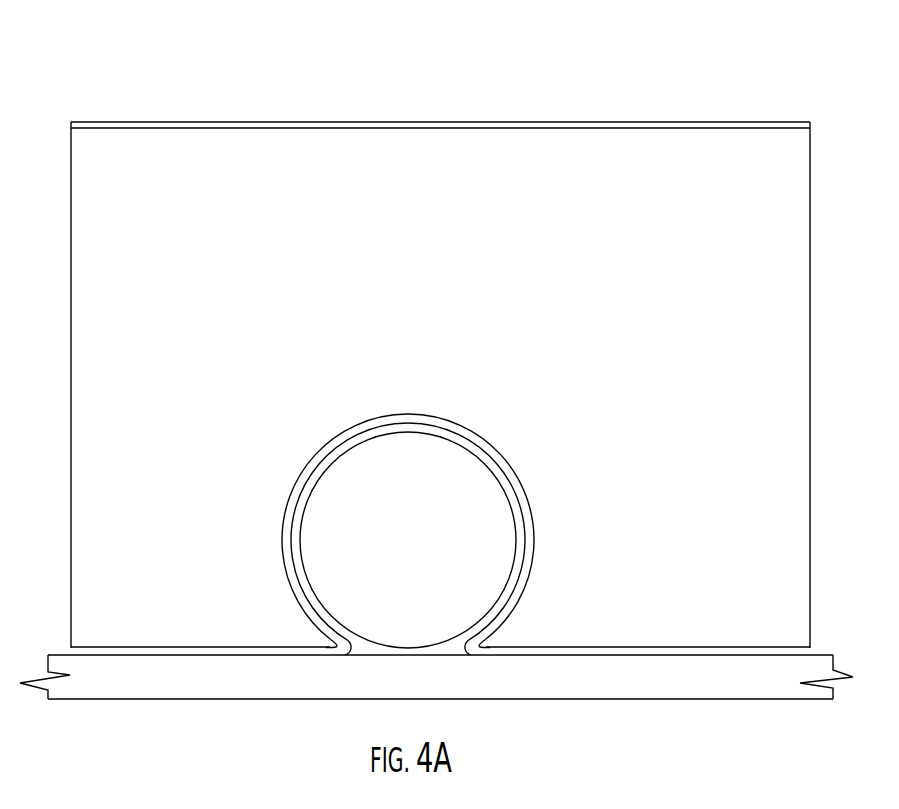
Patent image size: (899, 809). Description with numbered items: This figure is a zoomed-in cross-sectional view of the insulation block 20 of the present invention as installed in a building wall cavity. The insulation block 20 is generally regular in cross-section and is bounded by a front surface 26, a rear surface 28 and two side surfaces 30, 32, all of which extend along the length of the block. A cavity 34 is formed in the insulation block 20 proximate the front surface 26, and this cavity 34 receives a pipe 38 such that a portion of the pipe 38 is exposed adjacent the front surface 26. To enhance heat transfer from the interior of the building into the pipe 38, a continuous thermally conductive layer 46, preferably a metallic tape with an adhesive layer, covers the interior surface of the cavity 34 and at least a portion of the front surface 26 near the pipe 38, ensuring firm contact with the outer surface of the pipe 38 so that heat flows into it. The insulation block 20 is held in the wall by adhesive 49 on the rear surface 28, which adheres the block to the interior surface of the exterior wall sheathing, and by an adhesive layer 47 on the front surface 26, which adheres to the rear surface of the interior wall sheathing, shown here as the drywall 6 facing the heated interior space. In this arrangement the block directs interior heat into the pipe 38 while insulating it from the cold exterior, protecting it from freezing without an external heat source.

The insulation block 20 is at (606, 88).
The adhesive 49 is at (461, 122).
The rear surface 28 is at (302, 128).
The side surface 30 is at (71, 384).
The side surface 32 is at (810, 460).
The adhesive layer 47 is at (193, 656).
The thermally conductive layer 46 is at (636, 656).
The pipe 38 is at (381, 427).
The cavity 34 is at (517, 480).
The front surface 26 is at (703, 652).
The drywall 6 is at (728, 678).